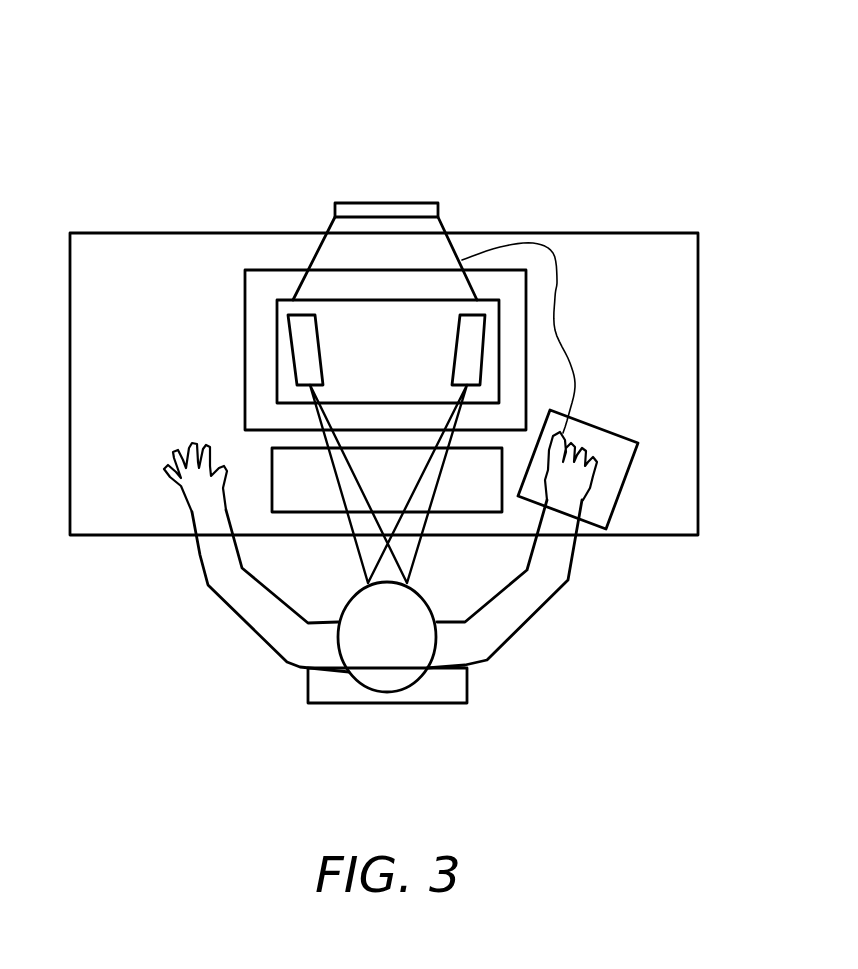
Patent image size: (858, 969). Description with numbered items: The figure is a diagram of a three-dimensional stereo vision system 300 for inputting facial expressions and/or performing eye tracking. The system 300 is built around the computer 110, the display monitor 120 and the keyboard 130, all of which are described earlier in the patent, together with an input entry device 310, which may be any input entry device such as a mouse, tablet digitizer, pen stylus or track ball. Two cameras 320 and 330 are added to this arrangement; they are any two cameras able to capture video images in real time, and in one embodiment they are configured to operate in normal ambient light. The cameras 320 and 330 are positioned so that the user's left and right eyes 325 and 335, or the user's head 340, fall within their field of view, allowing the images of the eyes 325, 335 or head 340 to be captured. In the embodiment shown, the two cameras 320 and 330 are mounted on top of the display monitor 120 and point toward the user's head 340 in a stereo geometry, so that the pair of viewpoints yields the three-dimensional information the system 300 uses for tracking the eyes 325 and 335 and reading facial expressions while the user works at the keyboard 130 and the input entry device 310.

The 3-D stereo vision system 300 is at (711, 66).
The computer 110 is at (492, 280).
The display monitor 120 is at (385, 223).
The keyboard 130 is at (285, 495).
The input entry device 310 is at (585, 443).
The camera 320 is at (296, 318).
The camera 330 is at (472, 320).
The user's left eye 325 is at (387, 582).
The user's right eye 335 is at (387, 582).
The user's head 340 is at (385, 597).